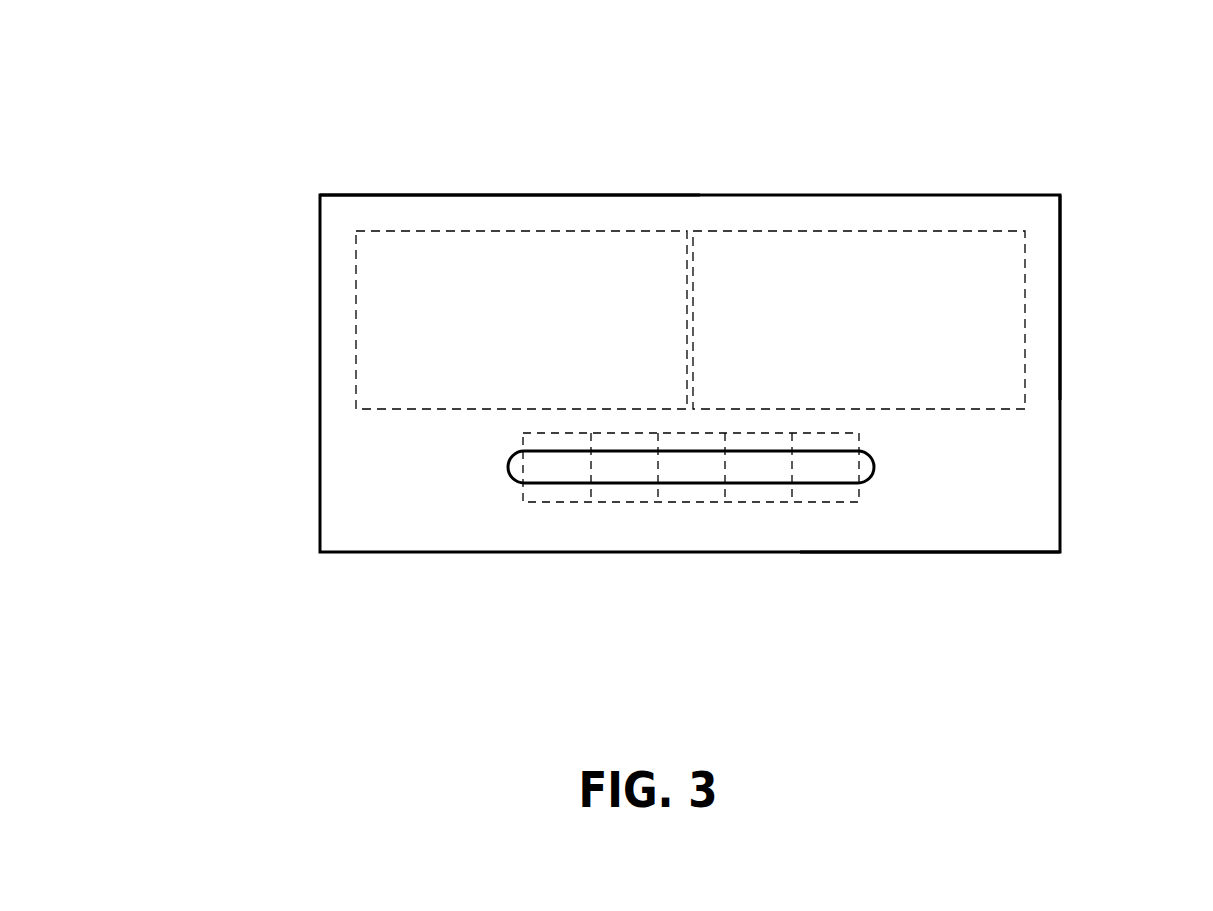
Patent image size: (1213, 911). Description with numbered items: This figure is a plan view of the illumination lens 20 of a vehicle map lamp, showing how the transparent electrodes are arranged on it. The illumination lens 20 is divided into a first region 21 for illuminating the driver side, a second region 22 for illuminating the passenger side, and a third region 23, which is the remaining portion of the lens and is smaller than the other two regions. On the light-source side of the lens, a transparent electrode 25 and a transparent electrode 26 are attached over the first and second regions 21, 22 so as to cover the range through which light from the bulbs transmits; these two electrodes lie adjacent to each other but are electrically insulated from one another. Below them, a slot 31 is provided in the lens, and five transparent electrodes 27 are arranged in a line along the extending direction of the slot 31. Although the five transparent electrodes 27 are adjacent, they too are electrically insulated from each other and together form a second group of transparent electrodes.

The illumination lens 20 is at (917, 192).
The first region 21 is at (380, 195).
The second region 22 is at (1030, 195).
The third region 23 is at (992, 524).
The transparent electrode 25 is at (356, 338).
The transparent electrode 26 is at (1025, 313).
The transparent electrodes 27 is at (557, 502).
The slot 31 is at (508, 467).